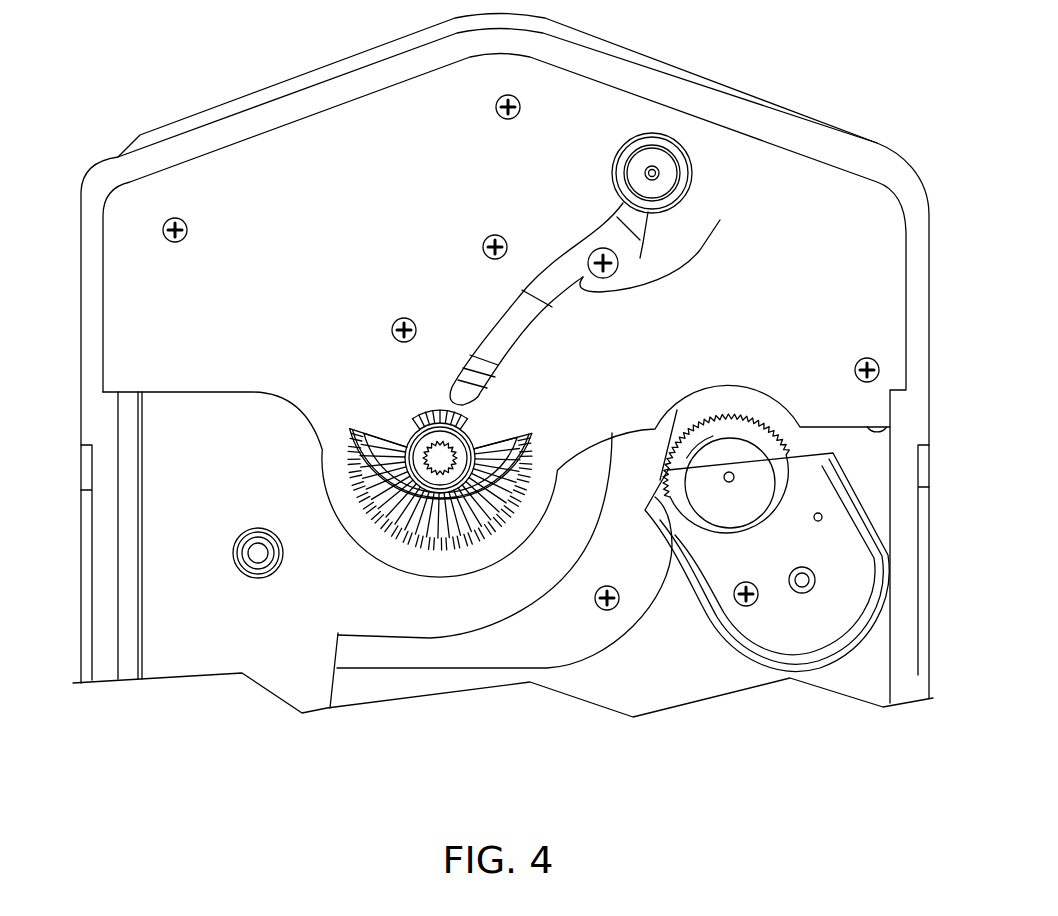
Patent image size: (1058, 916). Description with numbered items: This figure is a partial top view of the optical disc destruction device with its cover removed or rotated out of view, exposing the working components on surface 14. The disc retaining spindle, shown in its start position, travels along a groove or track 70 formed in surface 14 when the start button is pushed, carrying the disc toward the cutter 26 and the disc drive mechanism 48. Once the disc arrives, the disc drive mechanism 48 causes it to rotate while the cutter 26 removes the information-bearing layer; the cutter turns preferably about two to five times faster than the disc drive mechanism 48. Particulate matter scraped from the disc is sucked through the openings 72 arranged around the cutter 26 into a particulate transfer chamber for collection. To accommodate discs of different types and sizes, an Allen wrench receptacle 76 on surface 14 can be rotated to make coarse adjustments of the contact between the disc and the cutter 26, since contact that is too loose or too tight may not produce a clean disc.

The surface 14 is at (655, 140).
The groove or track 70 is at (720, 220).
The Allen wrench receptacle 76 is at (255, 578).
The openings 72 is at (443, 478).
The cutter 26 is at (471, 549).
The disc drive mechanism 48 is at (696, 588).